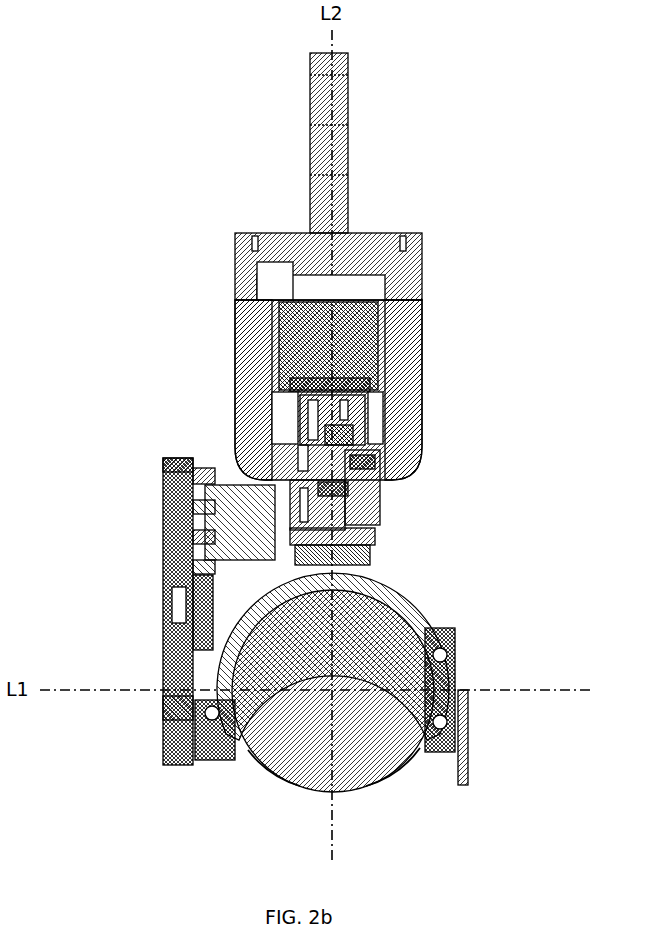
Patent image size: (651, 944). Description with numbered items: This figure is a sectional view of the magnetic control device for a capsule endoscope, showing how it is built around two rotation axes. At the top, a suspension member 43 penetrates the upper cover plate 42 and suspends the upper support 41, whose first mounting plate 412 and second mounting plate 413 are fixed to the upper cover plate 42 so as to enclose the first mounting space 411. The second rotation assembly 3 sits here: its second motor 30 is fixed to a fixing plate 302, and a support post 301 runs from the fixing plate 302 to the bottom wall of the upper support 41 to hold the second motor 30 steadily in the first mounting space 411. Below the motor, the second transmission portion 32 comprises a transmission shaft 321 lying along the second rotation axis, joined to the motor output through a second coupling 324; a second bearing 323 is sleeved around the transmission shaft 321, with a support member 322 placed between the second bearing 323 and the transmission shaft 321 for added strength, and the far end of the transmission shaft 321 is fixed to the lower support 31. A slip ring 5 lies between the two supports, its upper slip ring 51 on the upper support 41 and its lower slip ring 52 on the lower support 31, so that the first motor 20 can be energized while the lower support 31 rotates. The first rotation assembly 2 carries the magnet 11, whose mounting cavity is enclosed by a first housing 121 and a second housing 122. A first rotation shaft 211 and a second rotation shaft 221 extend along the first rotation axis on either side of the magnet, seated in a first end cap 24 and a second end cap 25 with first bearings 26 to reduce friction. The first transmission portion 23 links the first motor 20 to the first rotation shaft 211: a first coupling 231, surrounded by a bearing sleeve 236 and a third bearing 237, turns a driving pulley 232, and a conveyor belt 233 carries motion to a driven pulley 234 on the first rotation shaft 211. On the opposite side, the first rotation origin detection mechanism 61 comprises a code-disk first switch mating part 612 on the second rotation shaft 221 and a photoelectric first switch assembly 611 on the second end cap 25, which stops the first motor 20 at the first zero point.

The suspension member 43 is at (350, 150).
The upper cover plate 42 is at (235, 240).
The first mounting space 411 is at (288, 282).
The upper support 41 is at (146, 320).
The first mounting plate 412 is at (235, 355).
The second mounting plate 413 is at (422, 318).
The second motor 30 is at (372, 345).
The fixing plate 302 is at (358, 381).
The support post 301 is at (352, 406).
The second coupling 324 is at (352, 434).
The second rotation assembly 3 is at (486, 433).
The second transmission portion 32 is at (455, 486).
The support member 322 is at (362, 461).
The second bearing 323 is at (338, 490).
The transmission shaft 321 is at (346, 512).
The upper slip ring 51 is at (362, 538).
The slip ring 5 is at (440, 553).
The lower slip ring 52 is at (360, 562).
The first motor 20 is at (232, 494).
The first transmission portion 23 is at (135, 612).
The conveyor belt 233 is at (167, 458).
The third bearing 237 is at (193, 476).
The first coupling 231 is at (193, 507).
The bearing sleeve 236 is at (193, 537).
The driving pulley 232 is at (193, 567).
The driven pulley 234 is at (165, 657).
The lower support 31 is at (412, 606).
The magnet 11 is at (322, 778).
The first housing 121 is at (290, 786).
The second housing 122 is at (376, 780).
The first end cap 24 is at (210, 762).
The first bearing 26 is at (206, 712).
The first rotation shaft 211 is at (170, 705).
The first rotation assembly 2 is at (160, 780).
The second end cap 25 is at (432, 755).
The second rotation shaft 221 is at (440, 655).
The first switch mating part 612 is at (450, 688).
The first switch assembly 611 is at (470, 732).
The first rotation origin detection mechanism 61 is at (535, 702).